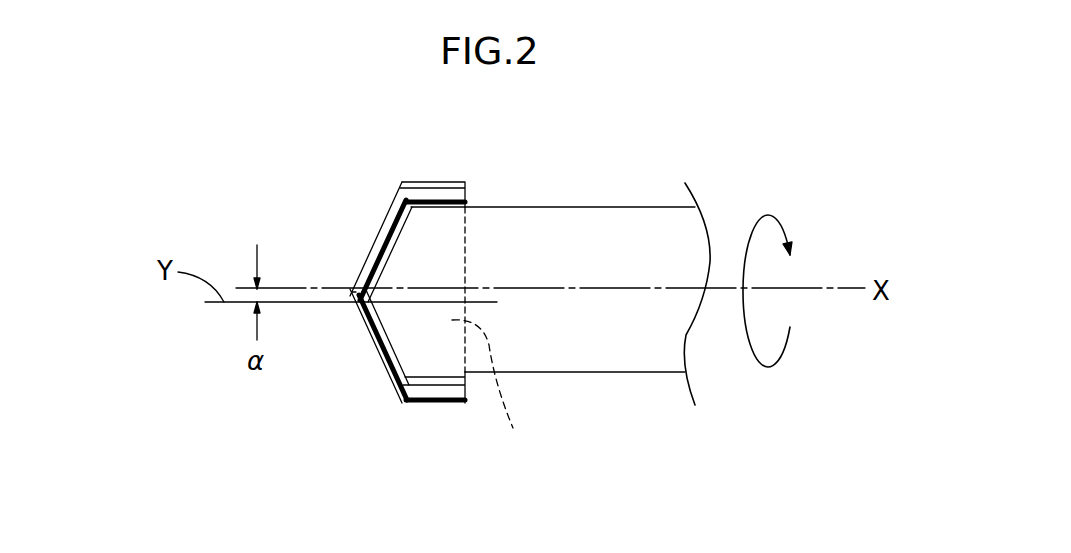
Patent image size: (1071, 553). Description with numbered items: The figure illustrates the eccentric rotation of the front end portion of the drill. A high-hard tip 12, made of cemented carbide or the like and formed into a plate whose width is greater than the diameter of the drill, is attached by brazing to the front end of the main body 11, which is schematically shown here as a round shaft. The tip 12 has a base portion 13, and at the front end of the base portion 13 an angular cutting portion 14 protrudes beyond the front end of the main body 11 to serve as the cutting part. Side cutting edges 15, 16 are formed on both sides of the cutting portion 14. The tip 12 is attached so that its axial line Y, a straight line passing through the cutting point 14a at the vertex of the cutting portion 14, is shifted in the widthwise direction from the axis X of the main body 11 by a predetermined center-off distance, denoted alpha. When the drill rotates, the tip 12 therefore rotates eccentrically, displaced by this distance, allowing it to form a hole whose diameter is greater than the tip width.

The main body 11 is at (597, 206).
The high-hard tip 12 is at (357, 263).
The base portion 13 is at (496, 388).
The cutting portion 14 is at (363, 338).
The cutting point 14a is at (350, 303).
The side cutting edge 15 is at (445, 185).
The side cutting edge 16 is at (436, 385).